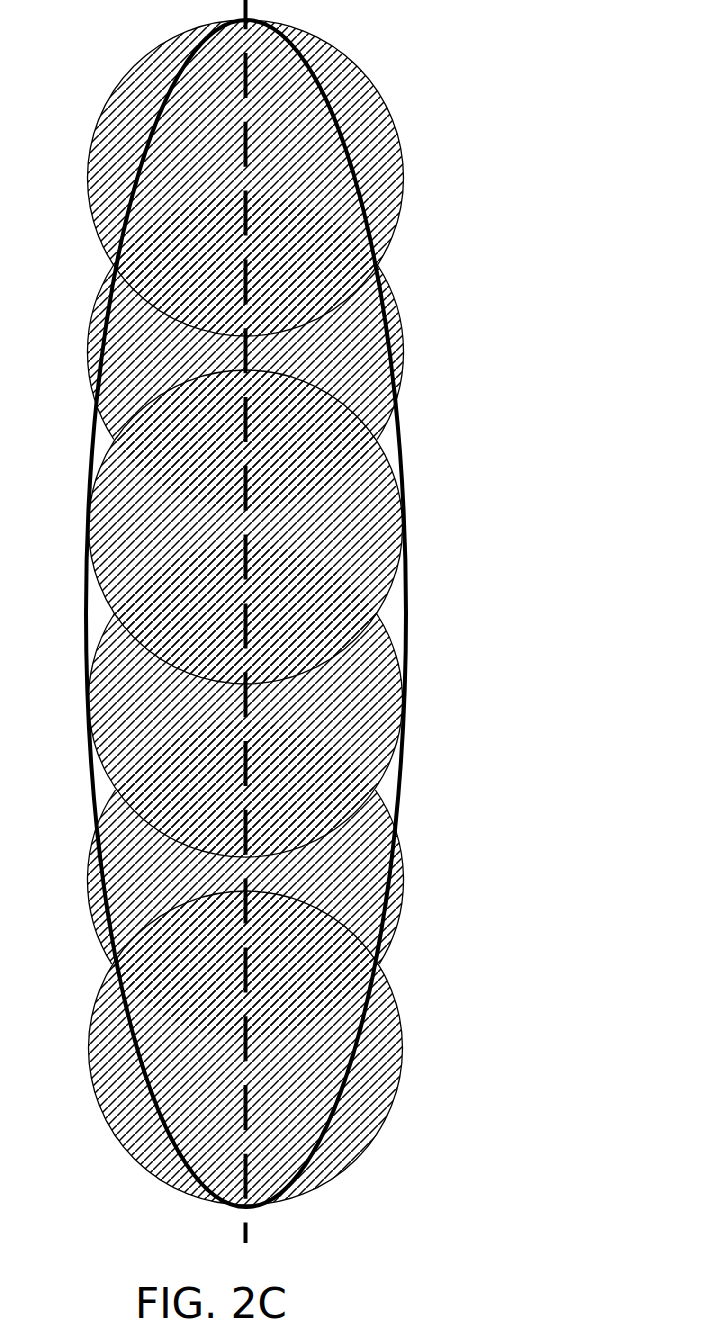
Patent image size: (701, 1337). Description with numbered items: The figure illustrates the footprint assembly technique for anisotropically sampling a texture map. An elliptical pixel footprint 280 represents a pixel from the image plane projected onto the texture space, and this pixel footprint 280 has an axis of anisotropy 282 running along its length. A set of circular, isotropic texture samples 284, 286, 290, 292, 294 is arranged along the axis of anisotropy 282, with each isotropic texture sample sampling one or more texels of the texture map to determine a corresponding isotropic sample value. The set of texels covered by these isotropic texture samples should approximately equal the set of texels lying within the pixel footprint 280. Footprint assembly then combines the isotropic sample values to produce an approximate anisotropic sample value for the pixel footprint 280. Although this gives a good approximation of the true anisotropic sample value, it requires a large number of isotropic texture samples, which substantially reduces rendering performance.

The elliptical pixel footprint 280 is at (402, 780).
The axis of anisotropy 282 is at (250, 1230).
The isotropic texture sample 284 is at (246, 178).
The isotropic texture sample 286 is at (245, 352).
The isotropic texture sample 290 is at (245, 700).
The isotropic texture sample 292 is at (245, 880).
The isotropic texture sample 294 is at (246, 1048).